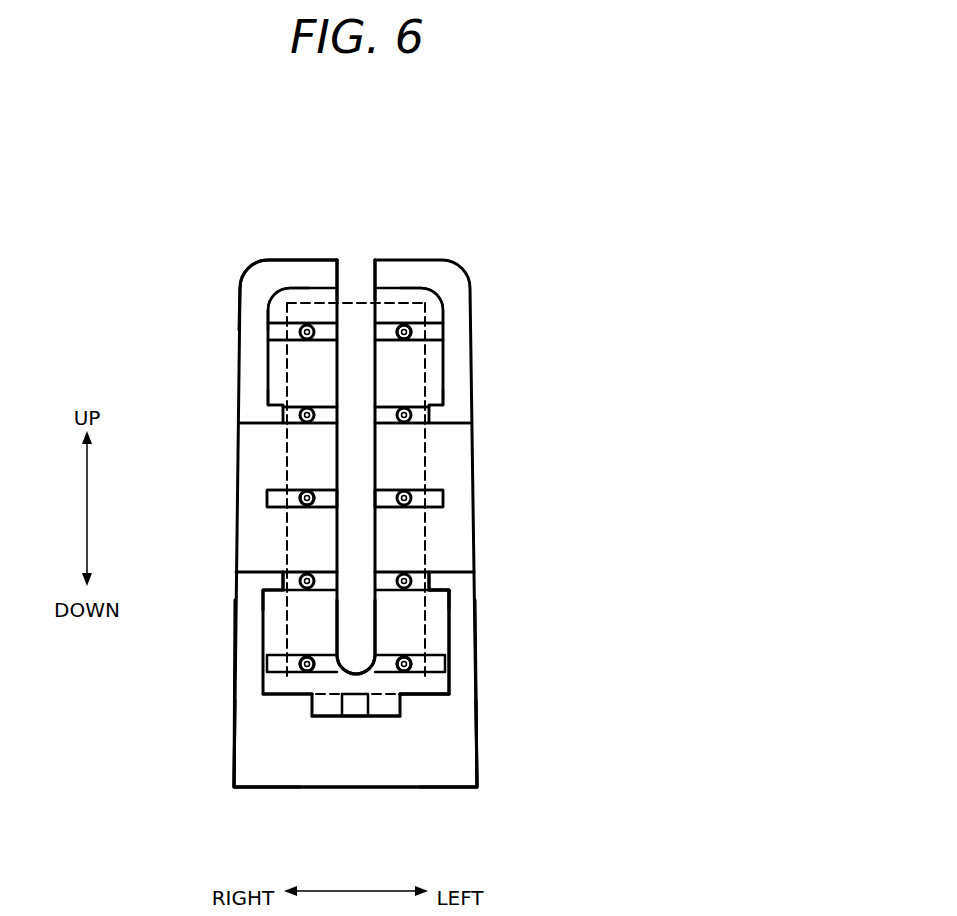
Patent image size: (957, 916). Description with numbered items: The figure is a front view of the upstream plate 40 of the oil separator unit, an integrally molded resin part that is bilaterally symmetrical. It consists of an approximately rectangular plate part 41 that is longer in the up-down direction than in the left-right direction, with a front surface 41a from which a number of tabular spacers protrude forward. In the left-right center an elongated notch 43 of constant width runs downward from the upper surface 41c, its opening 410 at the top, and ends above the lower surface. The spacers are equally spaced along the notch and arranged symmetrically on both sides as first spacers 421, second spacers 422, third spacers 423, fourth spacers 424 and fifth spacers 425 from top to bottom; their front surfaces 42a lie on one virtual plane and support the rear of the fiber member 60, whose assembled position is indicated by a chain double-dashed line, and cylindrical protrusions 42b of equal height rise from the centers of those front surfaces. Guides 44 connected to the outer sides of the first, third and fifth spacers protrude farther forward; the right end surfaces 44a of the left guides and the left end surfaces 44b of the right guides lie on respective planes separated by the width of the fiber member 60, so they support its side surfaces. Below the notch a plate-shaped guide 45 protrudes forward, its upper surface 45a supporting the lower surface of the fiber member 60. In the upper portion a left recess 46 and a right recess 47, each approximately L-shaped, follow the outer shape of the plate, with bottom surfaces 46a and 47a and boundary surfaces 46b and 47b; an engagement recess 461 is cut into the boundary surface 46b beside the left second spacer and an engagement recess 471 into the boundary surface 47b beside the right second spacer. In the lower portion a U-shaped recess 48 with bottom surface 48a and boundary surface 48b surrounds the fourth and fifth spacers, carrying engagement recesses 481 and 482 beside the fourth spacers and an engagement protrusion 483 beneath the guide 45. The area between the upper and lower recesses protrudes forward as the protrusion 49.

The upstream plate 40 is at (478, 245).
The plate part 41 is at (394, 258).
The front surface 41a is at (288, 632).
The upper surface 41c is at (275, 259).
The slot opening 410 is at (331, 268).
The front surfaces 42a is at (293, 332).
The cylindrical protrusions 42b is at (393, 323).
The first spacers 421 is at (380, 322).
The second spacers 422 is at (290, 348).
The third spacers 423 is at (323, 488).
The fourth spacers 424 is at (295, 612).
The fifth spacers 425 is at (318, 682).
The notch 43 is at (343, 552).
The guides 44 is at (450, 303).
The right end surfaces 44a is at (460, 276).
The left end surfaces 44b is at (297, 510).
The guide 45 is at (348, 718).
The upper surface 45a is at (355, 693).
The left recess 46 is at (457, 328).
The bottom surface 46a is at (417, 270).
The boundary surface 46b is at (432, 396).
The engagement recess 461 is at (445, 410).
The right recess 47 is at (258, 298).
The bottom surface 47a is at (260, 272).
The boundary surface 47b is at (268, 317).
The engagement recess 471 is at (283, 408).
The recess 48 is at (262, 777).
The bottom surface 48a is at (462, 757).
The boundary surface 48b is at (450, 620).
The engagement recess 481 is at (445, 590).
The engagement recess 482 is at (277, 583).
The engagement protrusion 483 is at (378, 717).
The protrusion 49 is at (255, 498).
The fiber member 60 is at (423, 457).